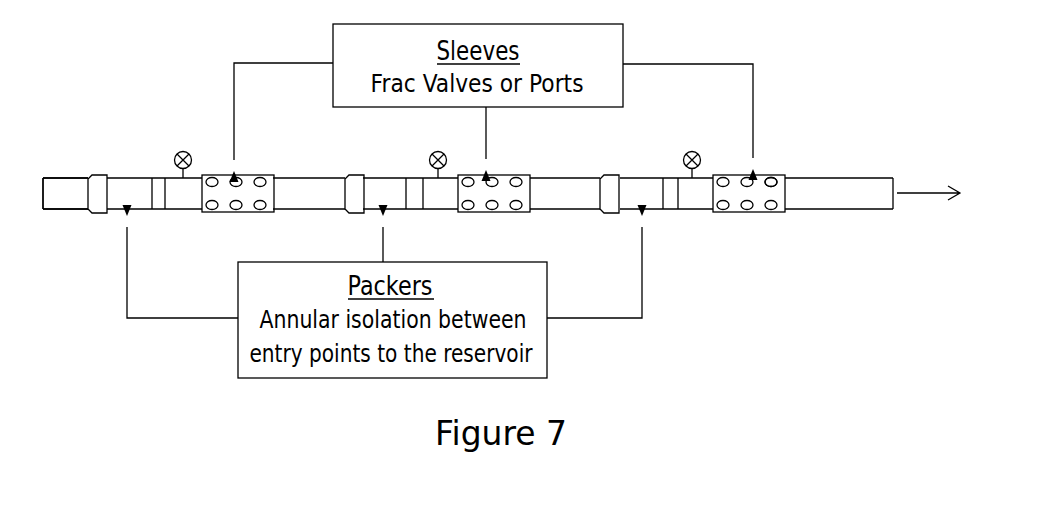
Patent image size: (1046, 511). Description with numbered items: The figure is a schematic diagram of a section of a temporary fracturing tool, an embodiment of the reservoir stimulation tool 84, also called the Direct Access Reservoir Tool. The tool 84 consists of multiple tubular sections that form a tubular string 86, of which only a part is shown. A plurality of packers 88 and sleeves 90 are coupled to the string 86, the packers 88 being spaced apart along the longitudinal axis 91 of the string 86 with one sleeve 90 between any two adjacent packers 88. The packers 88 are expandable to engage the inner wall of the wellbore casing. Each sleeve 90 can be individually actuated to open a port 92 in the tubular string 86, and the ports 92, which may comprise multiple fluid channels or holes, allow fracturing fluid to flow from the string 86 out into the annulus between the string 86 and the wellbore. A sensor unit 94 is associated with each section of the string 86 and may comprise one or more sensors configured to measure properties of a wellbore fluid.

The reservoir stimulation tool 84 is at (160, 94).
The tubular string 86 is at (65, 211).
The packers 88 is at (650, 213).
The sleeves 90 is at (776, 210).
The longitudinal axis 91 is at (927, 195).
The port 92 is at (776, 180).
The sensor unit 94 is at (692, 151).